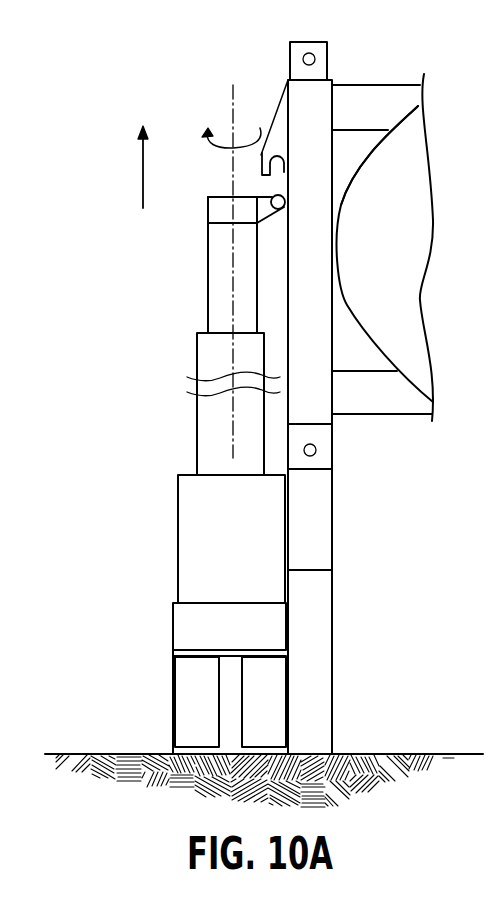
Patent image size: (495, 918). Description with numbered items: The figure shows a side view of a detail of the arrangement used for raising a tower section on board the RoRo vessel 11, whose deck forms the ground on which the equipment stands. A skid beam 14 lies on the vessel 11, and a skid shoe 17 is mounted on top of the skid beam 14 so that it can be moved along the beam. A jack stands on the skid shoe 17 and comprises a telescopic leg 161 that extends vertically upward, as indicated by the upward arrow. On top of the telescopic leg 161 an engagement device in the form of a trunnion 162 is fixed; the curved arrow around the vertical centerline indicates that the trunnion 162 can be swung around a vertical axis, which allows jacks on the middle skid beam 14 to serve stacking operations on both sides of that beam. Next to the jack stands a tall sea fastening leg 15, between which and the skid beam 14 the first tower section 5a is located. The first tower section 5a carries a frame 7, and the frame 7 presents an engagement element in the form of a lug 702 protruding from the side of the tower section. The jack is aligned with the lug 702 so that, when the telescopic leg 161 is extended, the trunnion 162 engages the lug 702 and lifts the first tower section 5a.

The RoRo vessel 11 is at (418, 754).
The sea fastening leg 15 is at (320, 650).
The frame 7 is at (408, 84).
The first tower section 5a is at (363, 158).
The telescopic leg 161 is at (212, 293).
The trunnion 162 is at (272, 196).
The lug 702 is at (270, 152).
The skid shoe 17 is at (178, 533).
The skid beam 14 is at (173, 698).